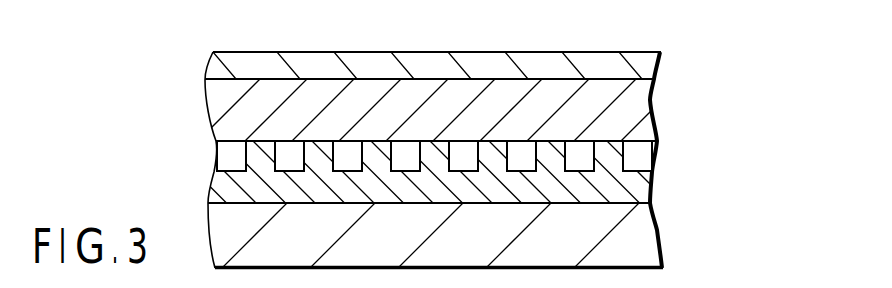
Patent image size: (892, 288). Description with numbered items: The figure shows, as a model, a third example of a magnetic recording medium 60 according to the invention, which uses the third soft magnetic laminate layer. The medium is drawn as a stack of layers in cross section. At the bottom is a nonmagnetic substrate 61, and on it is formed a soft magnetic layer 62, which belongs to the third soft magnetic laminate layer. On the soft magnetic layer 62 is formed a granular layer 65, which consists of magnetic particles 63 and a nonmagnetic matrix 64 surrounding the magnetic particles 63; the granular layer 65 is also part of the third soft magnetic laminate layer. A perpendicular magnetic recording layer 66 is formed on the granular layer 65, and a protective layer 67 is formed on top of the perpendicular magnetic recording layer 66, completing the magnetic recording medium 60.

The magnetic recording medium 60 is at (758, 195).
The nonmagnetic substrate 61 is at (637, 245).
The soft magnetic layer 62 is at (633, 192).
The magnetic particles 63 is at (612, 163).
The nonmagnetic matrix 64 is at (643, 163).
The granular layer 65 is at (720, 125).
The perpendicular magnetic recording layer 66 is at (638, 110).
The protective layer 67 is at (660, 62).